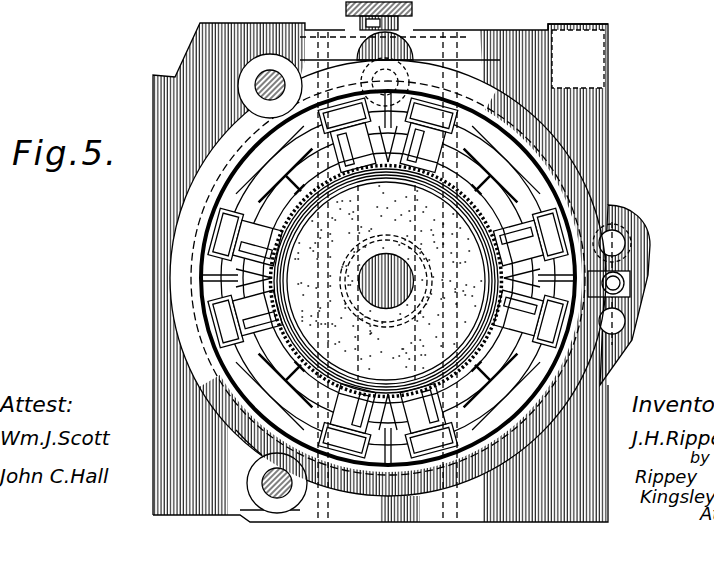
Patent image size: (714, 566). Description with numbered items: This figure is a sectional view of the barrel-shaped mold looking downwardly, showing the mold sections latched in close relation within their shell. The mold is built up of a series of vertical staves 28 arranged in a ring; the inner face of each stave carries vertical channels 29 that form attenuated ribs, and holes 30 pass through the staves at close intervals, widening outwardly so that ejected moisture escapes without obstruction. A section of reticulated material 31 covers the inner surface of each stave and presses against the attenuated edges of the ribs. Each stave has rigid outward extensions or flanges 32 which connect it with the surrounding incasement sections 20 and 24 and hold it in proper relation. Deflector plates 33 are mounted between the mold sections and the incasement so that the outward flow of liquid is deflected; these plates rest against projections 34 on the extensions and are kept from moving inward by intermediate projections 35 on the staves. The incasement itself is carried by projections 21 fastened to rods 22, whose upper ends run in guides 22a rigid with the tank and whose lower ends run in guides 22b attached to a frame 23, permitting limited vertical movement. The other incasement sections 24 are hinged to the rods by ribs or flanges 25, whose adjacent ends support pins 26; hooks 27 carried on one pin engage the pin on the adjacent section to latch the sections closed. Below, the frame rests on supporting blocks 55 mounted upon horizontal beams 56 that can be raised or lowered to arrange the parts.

The incasement section 20 is at (216, 263).
The projections 21 is at (168, 294).
The rods 22 is at (247, 488).
The guides 22a is at (240, 447).
The guides 22b is at (232, 66).
The frame 23 is at (505, 32).
The incasement sections 24 is at (433, 278).
The ribs or flanges 25 is at (445, 292).
The pins 26 is at (613, 241).
The hooks 27 is at (645, 280).
The staves 28 is at (221, 361).
The vertical channels 29 is at (498, 262).
The holes 30 is at (286, 323).
The reticulated material 31 is at (278, 251).
The extensions or flanges 32 is at (197, 322).
The deflector plates 33 is at (207, 229).
The projections 34 is at (246, 175).
The intermediate projections 35 is at (292, 227).
The supporting blocks 55 is at (262, 73).
The horizontal beams 56 is at (375, 68).